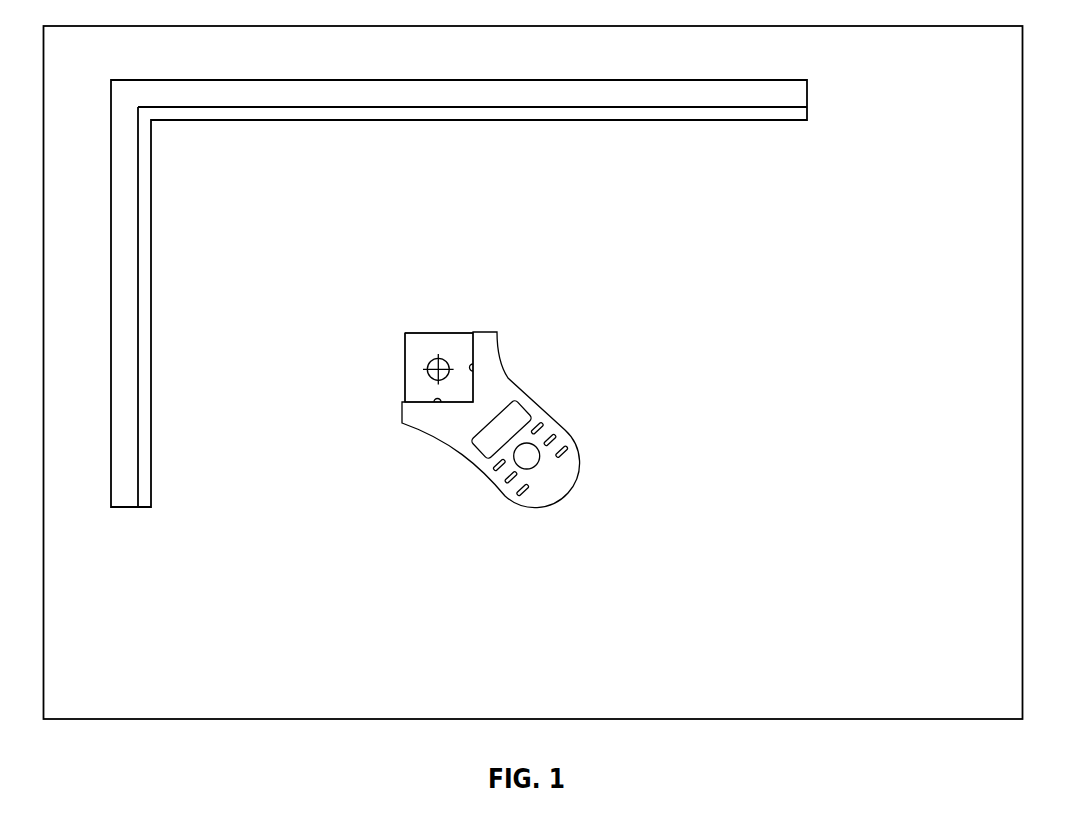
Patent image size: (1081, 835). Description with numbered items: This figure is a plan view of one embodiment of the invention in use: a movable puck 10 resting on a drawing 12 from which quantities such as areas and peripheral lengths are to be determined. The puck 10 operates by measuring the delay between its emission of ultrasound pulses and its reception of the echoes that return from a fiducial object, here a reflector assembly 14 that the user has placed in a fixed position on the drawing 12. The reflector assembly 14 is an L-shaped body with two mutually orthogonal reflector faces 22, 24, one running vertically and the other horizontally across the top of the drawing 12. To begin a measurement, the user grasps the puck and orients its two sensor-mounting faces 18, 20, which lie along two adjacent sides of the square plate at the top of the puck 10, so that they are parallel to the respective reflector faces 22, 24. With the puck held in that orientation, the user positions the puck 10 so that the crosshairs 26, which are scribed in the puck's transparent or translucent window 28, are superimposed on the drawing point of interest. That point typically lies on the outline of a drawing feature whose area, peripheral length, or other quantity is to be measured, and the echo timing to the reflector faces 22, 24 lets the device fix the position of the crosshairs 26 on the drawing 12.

The puck 10 is at (538, 373).
The drawing 12 is at (1023, 240).
The reflector assembly 14 is at (458, 80).
The sensor-mounting face 18 is at (472, 345).
The sensor-mounting face 20 is at (420, 402).
The reflector face 22 is at (147, 387).
The reflector face 24 is at (338, 108).
The crosshairs 26 is at (417, 358).
The window 28 is at (418, 334).